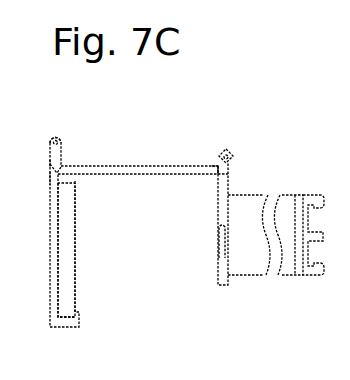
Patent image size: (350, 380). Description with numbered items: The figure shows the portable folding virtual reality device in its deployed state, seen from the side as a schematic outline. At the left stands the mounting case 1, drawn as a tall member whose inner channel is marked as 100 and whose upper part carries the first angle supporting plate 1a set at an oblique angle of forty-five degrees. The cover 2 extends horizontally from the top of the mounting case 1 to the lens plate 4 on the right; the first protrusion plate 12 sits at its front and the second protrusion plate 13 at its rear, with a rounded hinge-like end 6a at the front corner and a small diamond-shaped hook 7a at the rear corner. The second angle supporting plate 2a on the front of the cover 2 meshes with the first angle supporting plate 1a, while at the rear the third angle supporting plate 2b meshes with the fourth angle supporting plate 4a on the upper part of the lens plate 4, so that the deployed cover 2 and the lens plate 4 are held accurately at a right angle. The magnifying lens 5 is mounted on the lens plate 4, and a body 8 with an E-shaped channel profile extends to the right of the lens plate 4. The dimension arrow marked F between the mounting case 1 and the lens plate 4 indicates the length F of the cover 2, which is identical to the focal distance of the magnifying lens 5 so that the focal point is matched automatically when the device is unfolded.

The mounting case 1 is at (65, 318).
The first angle supporting plate 1a is at (51, 176).
The cover 2 is at (135, 166).
The second angle supporting plate 2a is at (52, 168).
The third angle supporting plate 2b is at (219, 163).
The lens plate 4 is at (228, 188).
The fourth angle supporting plate 4a is at (228, 172).
The magnifying lens 5 is at (219, 256).
The hinge pin 6a is at (55, 136).
The hook portion 7a is at (232, 156).
The rail body 8 is at (288, 276).
The first protrusion plate 12 is at (50, 164).
The second protrusion plate 13 is at (225, 150).
The inner channel of first frame member 100 is at (63, 276).
The length of the cover F is at (218, 243).